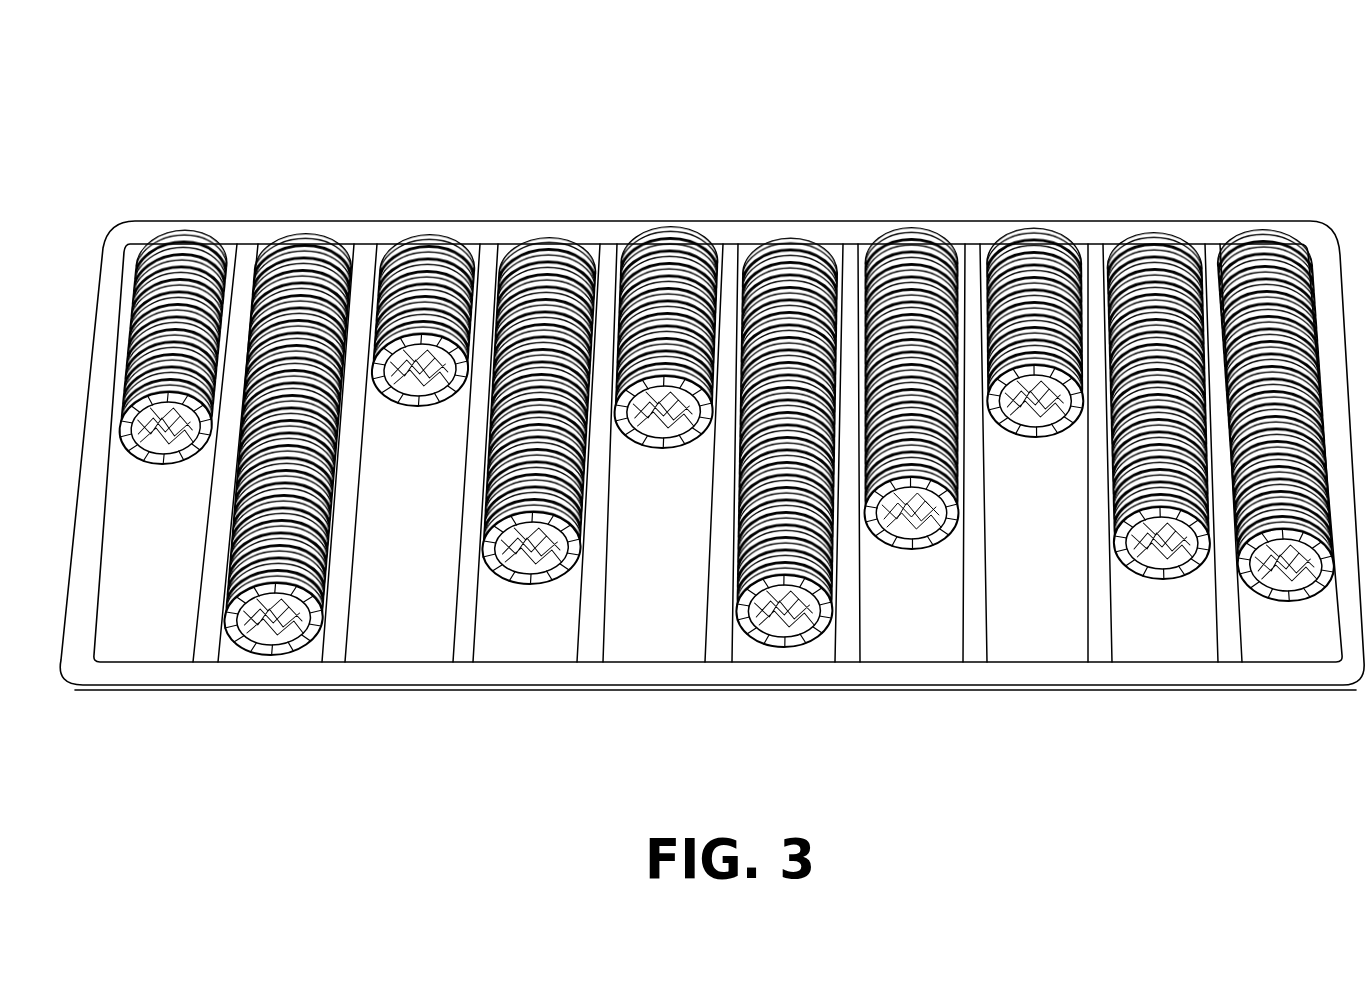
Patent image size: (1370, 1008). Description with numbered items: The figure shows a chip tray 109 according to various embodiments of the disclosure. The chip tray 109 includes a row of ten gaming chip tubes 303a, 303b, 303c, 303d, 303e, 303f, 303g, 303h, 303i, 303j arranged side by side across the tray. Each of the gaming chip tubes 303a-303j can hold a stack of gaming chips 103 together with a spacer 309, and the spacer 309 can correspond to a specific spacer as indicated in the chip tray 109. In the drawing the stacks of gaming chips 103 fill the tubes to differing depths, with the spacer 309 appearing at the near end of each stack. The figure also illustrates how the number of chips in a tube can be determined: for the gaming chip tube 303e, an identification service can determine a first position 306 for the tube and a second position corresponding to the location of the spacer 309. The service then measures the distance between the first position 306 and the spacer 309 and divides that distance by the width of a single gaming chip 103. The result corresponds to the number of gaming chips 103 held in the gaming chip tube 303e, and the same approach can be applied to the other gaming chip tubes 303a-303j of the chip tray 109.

The chip tray 109 is at (712, 368).
The gaming chips 103 is at (1153, 242).
The first position 306 is at (631, 361).
The spacer 309 is at (662, 451).
The gaming chip tube 303a is at (143, 650).
The gaming chip tube 303b is at (248, 650).
The gaming chip tube 303c is at (403, 650).
The gaming chip tube 303d is at (528, 650).
The gaming chip tube 303e is at (631, 469).
The gaming chip tube 303f is at (783, 650).
The gaming chip tube 303g is at (903, 650).
The gaming chip tube 303h is at (1055, 650).
The gaming chip tube 303i is at (1168, 650).
The gaming chip tube 303j is at (1292, 650).